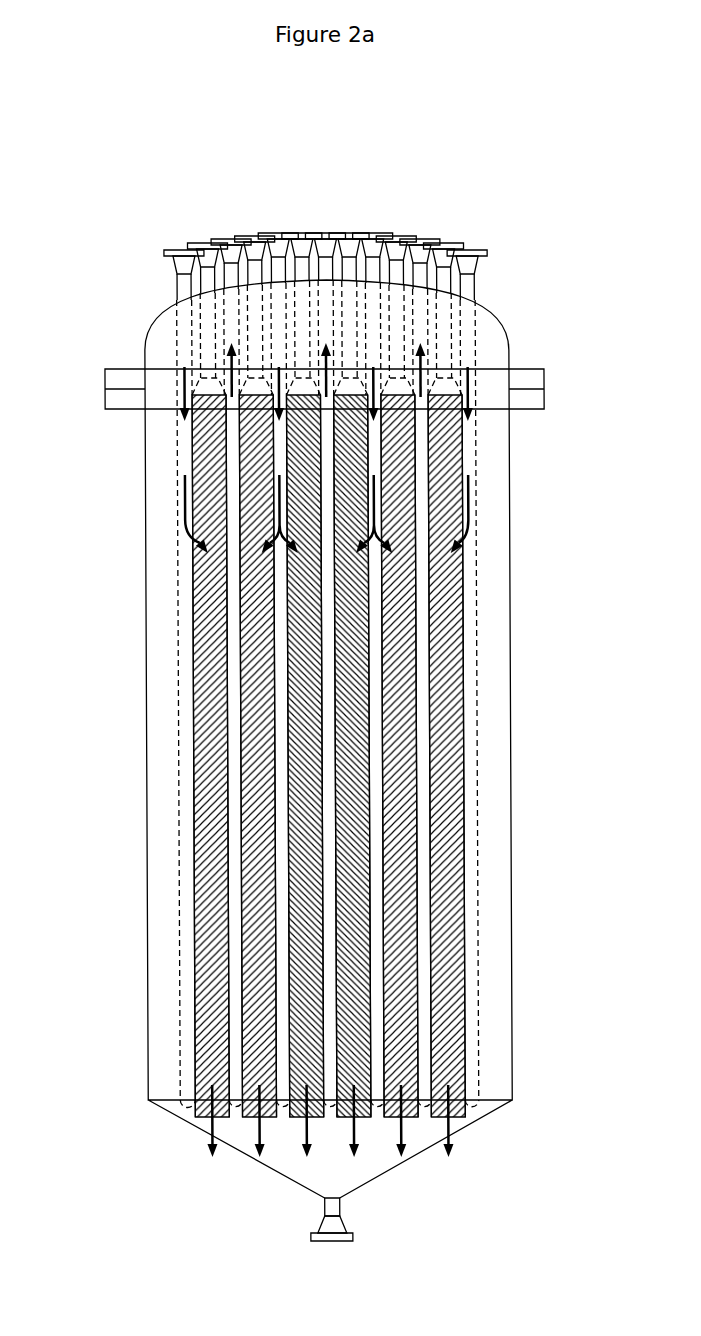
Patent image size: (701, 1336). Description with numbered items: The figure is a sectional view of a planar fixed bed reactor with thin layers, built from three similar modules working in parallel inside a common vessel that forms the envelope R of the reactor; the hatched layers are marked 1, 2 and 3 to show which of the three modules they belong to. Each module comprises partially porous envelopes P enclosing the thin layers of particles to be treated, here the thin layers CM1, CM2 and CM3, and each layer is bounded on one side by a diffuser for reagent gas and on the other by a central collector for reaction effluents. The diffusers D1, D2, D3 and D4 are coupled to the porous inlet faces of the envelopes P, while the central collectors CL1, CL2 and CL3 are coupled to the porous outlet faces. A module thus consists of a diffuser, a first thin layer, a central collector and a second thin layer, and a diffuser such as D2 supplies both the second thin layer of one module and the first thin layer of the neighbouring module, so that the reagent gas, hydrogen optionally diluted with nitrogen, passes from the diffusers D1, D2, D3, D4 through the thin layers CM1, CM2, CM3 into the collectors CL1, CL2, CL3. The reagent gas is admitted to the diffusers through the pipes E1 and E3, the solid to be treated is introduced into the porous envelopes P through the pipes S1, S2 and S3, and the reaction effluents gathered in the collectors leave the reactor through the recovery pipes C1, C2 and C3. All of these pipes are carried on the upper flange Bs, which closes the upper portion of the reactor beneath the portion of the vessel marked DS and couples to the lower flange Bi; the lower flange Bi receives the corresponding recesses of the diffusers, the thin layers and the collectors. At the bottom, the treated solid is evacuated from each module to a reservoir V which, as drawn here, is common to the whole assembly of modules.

The pipe for admitting reagent gas E1 is at (186, 228).
The pipe for admitting solid S1 is at (209, 216).
The pipe for recovering reaction effluents C1 is at (233, 230).
The pipe for admitting solid S2 is at (304, 210).
The pipe for recovering reaction effluents C2 is at (327, 223).
The pipe for admitting reagent gas E3 is at (374, 213).
The pipe for admitting solid S3 is at (398, 216).
The pipe for recovering reaction effluents C3 is at (422, 232).
The dome / upper head of reactor DS is at (510, 334).
The upper flange Bs is at (128, 379).
The lower flange Bi is at (128, 400).
The diffuser D1 is at (185, 572).
The diffuser D2 is at (282, 724).
The diffuser D3 is at (374, 873).
The diffuser D4 is at (470, 902).
The thin layer CM1 is at (258, 627).
The thin layer CM2 is at (351, 825).
The thin layer CM3 is at (398, 626).
The central collector CL1 is at (233, 672).
The central collector CL2 is at (329, 776).
The central collector CL3 is at (422, 921).
The envelope of the reactor R is at (510, 797).
The partially porous envelope P is at (240, 1043).
The reservoir V is at (344, 1222).
The module 1 is at (234, 747).
The module 2 is at (328, 747).
The module 3 is at (423, 747).